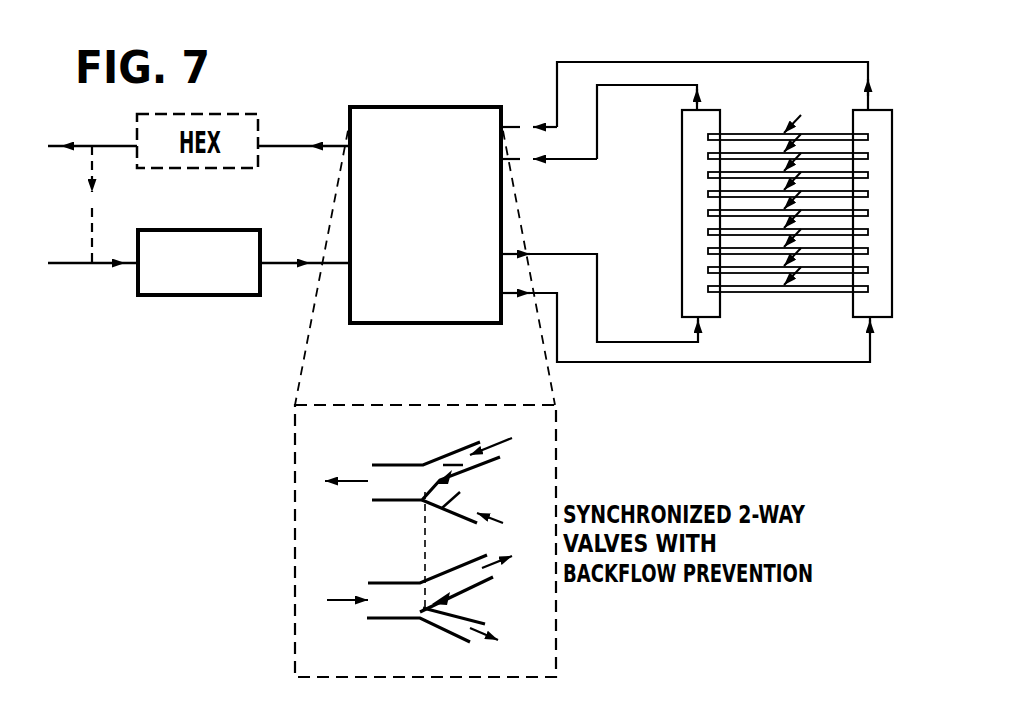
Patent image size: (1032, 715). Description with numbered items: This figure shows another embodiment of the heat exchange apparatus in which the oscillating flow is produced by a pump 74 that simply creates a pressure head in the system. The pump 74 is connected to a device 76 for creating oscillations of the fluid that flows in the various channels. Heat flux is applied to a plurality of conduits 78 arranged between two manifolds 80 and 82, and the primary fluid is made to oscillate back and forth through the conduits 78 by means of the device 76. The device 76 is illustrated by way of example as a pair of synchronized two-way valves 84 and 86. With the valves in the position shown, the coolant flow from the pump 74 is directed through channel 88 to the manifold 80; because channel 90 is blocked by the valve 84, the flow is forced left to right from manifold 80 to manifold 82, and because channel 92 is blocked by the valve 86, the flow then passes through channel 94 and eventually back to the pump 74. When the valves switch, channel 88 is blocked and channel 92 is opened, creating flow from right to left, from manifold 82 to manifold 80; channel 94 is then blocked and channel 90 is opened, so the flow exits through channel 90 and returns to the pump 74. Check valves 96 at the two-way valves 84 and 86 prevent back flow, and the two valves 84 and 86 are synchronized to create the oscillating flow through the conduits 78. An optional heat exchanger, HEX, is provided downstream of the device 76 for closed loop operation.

The pump 74 is at (197, 235).
The device for creating oscillations 76 is at (392, 107).
The conduits 78 is at (836, 132).
The manifold 80 is at (682, 205).
The manifold 82 is at (892, 128).
The two-way valve 84 is at (423, 498).
The two-way valve 86 is at (417, 608).
The channel 88 is at (598, 299).
The channel 90 is at (599, 131).
The channel 92 is at (729, 362).
The channel 94 is at (707, 62).
The check valves 96 is at (463, 465).